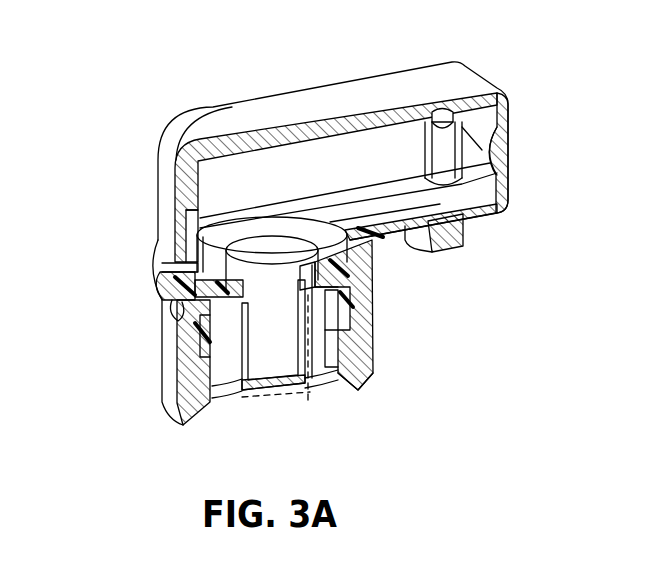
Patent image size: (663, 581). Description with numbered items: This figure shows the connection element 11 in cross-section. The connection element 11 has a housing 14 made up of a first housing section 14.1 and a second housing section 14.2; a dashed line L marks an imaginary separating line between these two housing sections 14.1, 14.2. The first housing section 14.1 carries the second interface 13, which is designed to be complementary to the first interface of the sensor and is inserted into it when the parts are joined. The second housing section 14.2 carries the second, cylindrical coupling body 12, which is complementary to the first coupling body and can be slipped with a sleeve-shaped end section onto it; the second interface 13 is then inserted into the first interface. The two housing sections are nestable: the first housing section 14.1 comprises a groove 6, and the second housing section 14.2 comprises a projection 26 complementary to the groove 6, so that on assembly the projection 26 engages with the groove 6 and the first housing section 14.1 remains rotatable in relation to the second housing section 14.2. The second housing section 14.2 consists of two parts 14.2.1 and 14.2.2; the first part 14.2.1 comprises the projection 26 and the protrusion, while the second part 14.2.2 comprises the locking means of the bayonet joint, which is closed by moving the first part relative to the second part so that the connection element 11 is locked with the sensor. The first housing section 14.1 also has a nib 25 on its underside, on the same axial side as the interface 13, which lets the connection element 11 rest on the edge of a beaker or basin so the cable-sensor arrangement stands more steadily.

The connection element 11 is at (152, 78).
The housing 14 is at (486, 67).
The first housing section 14.1 is at (147, 218).
The second housing section 14.2 is at (145, 382).
The first part of the second housing section 14.2.1 is at (355, 307).
The second part of the second housing section 14.2.2 is at (373, 375).
The second coupling body 12 is at (357, 343).
The second interface 13 is at (278, 362).
The nib 25 is at (463, 242).
The projection 26 is at (370, 273).
The groove 6 is at (178, 304).
The dashed separating line L is at (148, 262).